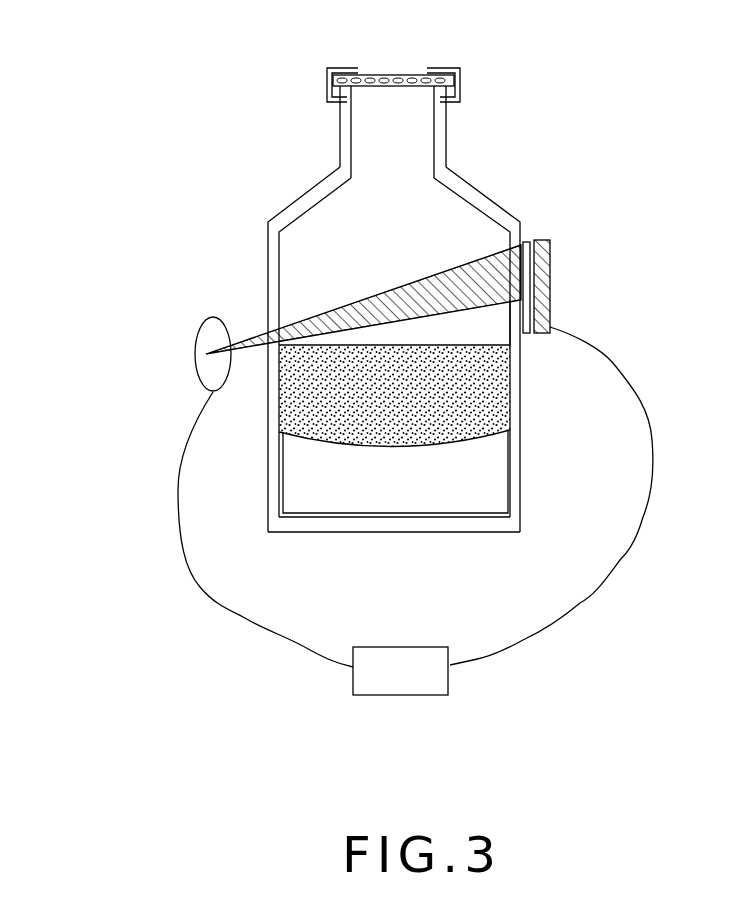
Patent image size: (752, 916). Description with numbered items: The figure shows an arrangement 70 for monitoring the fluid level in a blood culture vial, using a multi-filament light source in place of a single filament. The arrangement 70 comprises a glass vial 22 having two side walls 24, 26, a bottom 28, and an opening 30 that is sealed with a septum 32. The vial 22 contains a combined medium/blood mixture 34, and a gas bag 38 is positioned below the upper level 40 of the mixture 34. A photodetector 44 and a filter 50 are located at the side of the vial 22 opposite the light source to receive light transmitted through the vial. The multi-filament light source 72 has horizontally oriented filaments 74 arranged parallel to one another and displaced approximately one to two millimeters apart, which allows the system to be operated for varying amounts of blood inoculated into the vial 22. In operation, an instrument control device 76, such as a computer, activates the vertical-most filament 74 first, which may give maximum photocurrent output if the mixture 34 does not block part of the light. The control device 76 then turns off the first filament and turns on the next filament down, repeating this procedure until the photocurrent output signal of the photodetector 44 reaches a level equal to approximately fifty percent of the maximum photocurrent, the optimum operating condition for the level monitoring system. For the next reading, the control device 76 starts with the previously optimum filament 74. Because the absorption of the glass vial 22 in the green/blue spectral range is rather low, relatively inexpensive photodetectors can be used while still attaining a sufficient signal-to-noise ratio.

The arrangement 70 is at (218, 120).
The glass vial 22 is at (248, 235).
The side wall 24 is at (273, 482).
The side wall 26 is at (515, 454).
The bottom 28 is at (398, 518).
The opening 30 is at (382, 88).
The septum 32 is at (397, 76).
The combined medium/blood mixture 34 is at (500, 400).
The gas bag 38 is at (490, 493).
The upper level 40 is at (515, 343).
The photodetector 44 is at (552, 280).
The filter 50 is at (528, 333).
The multi-filament light source 72 is at (152, 360).
The filaments 74 is at (213, 345).
The instrument control device 76 is at (386, 687).